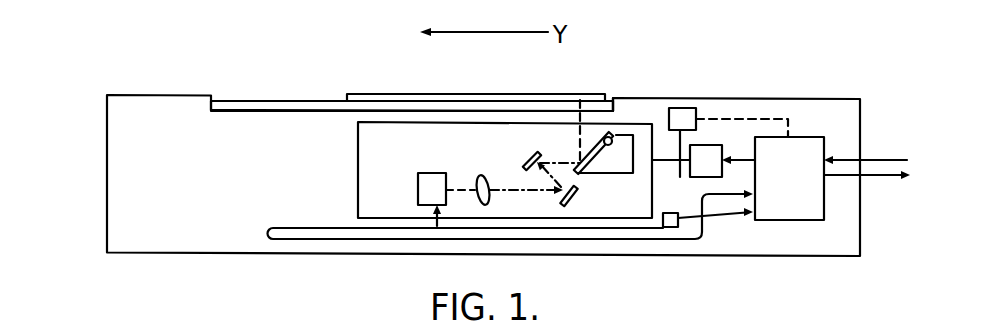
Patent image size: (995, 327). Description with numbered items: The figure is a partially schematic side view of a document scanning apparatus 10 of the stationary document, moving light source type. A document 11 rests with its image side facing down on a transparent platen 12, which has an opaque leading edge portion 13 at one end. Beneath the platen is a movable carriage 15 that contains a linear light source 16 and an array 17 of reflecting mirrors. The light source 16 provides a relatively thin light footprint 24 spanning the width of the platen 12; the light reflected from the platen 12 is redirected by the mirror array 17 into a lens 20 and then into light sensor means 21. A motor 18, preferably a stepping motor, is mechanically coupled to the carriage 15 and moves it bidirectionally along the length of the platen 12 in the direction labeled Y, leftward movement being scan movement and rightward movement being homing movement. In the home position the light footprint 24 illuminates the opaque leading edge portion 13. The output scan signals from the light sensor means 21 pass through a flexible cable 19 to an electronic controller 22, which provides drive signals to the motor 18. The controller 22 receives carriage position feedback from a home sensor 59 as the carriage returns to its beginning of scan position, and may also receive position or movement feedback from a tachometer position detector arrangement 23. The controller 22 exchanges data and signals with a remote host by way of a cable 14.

The document scanning apparatus 10 is at (100, 208).
The document 11 is at (392, 94).
The transparent platen 12 is at (288, 101).
The opaque leading edge portion 13 is at (620, 78).
The cable 14 is at (885, 146).
The movable carriage 15 is at (350, 178).
The linear light source 16 is at (619, 118).
The array of reflecting mirrors 17 is at (560, 142).
The motor 18 is at (706, 153).
The flexible cable 19 is at (704, 222).
The lens 20 is at (480, 175).
The light sensor means 21 is at (418, 188).
The electronic controller 22 is at (806, 180).
The tachometer position detector arrangement 23 is at (683, 116).
The light footprint 24 is at (580, 98).
The home sensor 59 is at (670, 228).